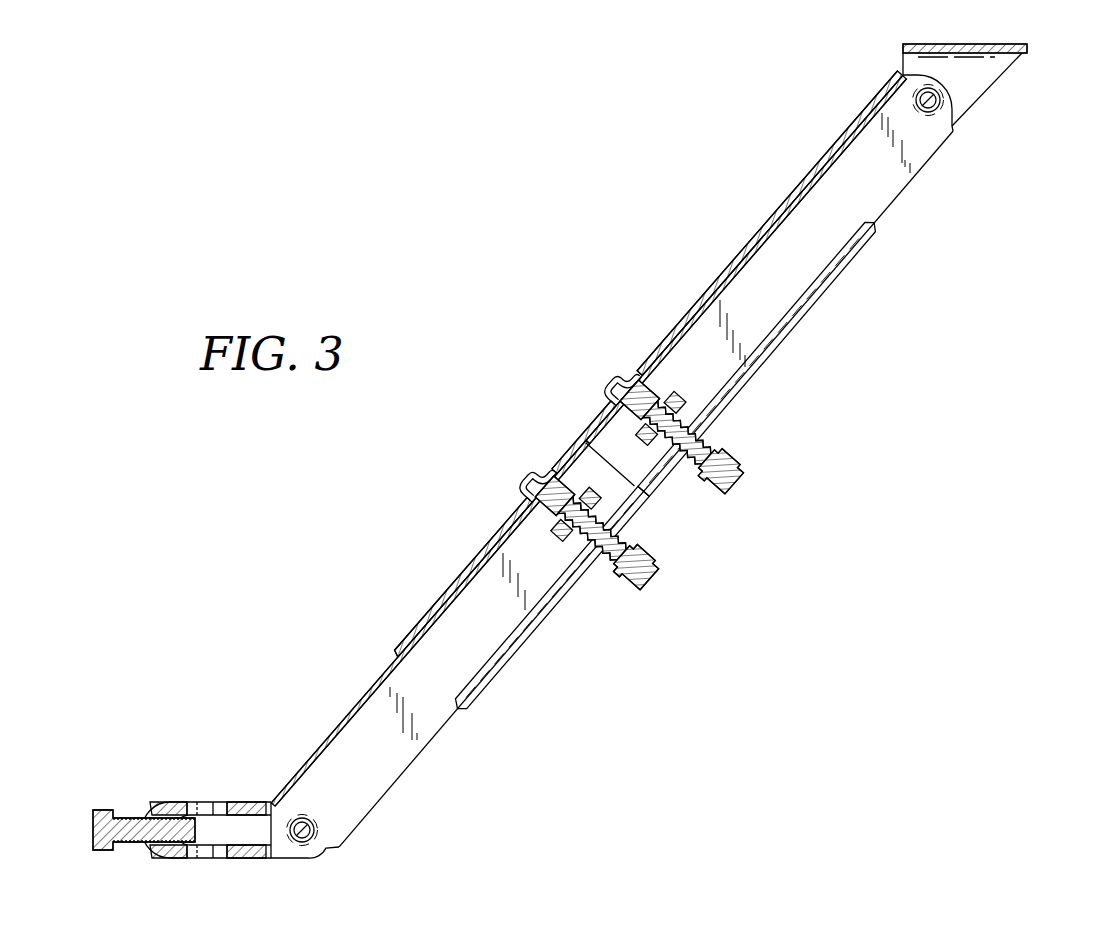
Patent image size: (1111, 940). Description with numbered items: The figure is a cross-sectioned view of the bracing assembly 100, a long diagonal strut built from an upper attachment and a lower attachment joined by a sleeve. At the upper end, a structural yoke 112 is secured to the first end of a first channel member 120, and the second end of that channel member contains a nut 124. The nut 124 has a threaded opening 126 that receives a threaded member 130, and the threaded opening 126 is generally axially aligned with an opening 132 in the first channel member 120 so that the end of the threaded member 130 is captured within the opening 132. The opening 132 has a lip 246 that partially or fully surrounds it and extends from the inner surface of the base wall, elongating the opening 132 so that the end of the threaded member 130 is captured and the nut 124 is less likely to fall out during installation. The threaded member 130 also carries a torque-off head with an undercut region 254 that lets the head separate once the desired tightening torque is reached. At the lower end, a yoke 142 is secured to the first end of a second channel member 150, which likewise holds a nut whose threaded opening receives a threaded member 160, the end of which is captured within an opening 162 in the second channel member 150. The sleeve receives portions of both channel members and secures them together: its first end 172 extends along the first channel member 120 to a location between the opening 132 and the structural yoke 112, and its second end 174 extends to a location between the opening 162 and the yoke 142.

The strut assembly 100 is at (678, 328).
The structural yoke 112 is at (1003, 45).
The first channel member 120 is at (906, 217).
The nut 124 is at (641, 438).
The threaded opening 126 is at (688, 408).
The threaded member 130 is at (743, 474).
The opening 132 is at (622, 420).
The yoke 142 is at (238, 790).
The second channel member 150 is at (365, 782).
The threaded member 160 is at (640, 592).
The opening 162 is at (551, 495).
The first end 172 is at (816, 168).
The second end 174 is at (418, 626).
The lip 246 is at (646, 385).
The undercut region 254 is at (693, 470).